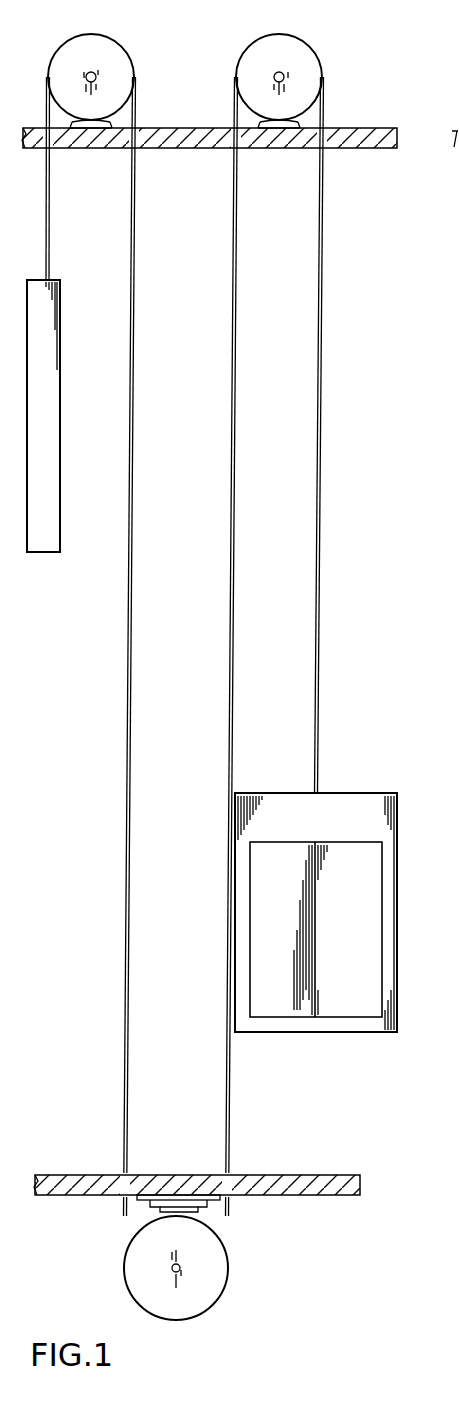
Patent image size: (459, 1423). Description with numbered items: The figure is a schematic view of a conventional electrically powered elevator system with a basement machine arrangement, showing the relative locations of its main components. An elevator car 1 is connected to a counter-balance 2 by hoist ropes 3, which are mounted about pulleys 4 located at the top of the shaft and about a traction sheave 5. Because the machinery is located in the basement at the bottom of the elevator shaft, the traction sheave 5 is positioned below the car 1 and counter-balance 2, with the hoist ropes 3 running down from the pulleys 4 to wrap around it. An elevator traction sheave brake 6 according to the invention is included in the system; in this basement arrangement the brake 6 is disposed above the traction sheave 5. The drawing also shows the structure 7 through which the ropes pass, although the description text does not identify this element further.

The elevator car 1 is at (397, 950).
The counter-balance 2 is at (60, 530).
The hoist ropes 3 is at (319, 673).
The pulleys 4 is at (105, 50).
The traction sheave 5 is at (187, 1305).
The elevator traction sheave brake 6 is at (212, 1203).
The machine room floor beam 7 is at (240, 138).